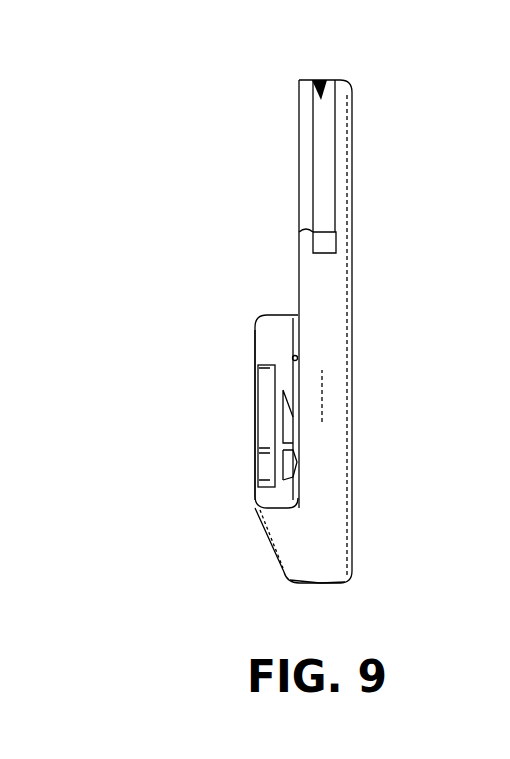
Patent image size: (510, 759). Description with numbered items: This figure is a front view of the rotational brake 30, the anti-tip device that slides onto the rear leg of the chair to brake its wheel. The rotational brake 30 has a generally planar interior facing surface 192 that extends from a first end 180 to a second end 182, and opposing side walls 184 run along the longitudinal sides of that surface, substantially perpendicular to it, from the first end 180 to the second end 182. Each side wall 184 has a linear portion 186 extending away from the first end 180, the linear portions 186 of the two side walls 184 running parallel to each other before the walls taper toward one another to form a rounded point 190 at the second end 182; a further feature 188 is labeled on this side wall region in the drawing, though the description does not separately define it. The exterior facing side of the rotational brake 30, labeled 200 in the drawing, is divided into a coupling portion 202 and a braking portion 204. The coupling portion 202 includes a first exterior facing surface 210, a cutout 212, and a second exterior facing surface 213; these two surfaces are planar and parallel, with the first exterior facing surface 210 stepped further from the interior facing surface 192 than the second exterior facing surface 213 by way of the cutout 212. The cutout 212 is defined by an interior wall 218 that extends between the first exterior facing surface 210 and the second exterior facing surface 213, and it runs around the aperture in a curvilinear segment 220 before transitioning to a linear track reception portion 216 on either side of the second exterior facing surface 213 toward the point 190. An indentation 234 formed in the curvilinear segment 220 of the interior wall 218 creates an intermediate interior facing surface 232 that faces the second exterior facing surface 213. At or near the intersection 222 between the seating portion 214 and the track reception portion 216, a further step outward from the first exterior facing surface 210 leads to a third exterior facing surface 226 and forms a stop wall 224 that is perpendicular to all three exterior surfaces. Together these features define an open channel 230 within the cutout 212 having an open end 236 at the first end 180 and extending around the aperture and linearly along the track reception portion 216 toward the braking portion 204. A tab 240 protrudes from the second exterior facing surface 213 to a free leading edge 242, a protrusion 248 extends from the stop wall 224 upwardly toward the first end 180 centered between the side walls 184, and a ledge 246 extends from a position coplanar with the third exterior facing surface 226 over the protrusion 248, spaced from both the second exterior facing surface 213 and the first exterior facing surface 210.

The rotational brake 30 is at (136, 146).
The first end 180 is at (340, 78).
The second end 182 is at (328, 570).
The side wall 184 is at (328, 324).
The linear portion 186 is at (344, 212).
The housing opening 188 is at (322, 422).
The rounded point 190 is at (307, 574).
The interior facing surface 192 is at (352, 268).
The insert 200 is at (298, 142).
The coupling portion 202 is at (306, 197).
The braking portion 204 is at (280, 524).
The first exterior facing surface 210 is at (298, 176).
The cutout 212 is at (299, 232).
The second exterior facing surface 213 is at (335, 114).
The seating portion 214 is at (340, 158).
The track reception portion 216 is at (298, 359).
The interior wall 218 is at (306, 124).
The curvilinear segment 220 is at (337, 243).
The intersection 222 is at (300, 300).
The stop wall 224 is at (298, 316).
The third exterior facing surface 226 is at (255, 353).
The open channel 230 is at (333, 80).
The intermediate interior facing surface 232 is at (314, 231).
The indentation 234 is at (324, 183).
The open end 236 is at (314, 82).
The tab 240 is at (300, 417).
The leading edge 242 is at (298, 440).
The ledge 246 is at (260, 418).
The protrusion 248 is at (297, 462).